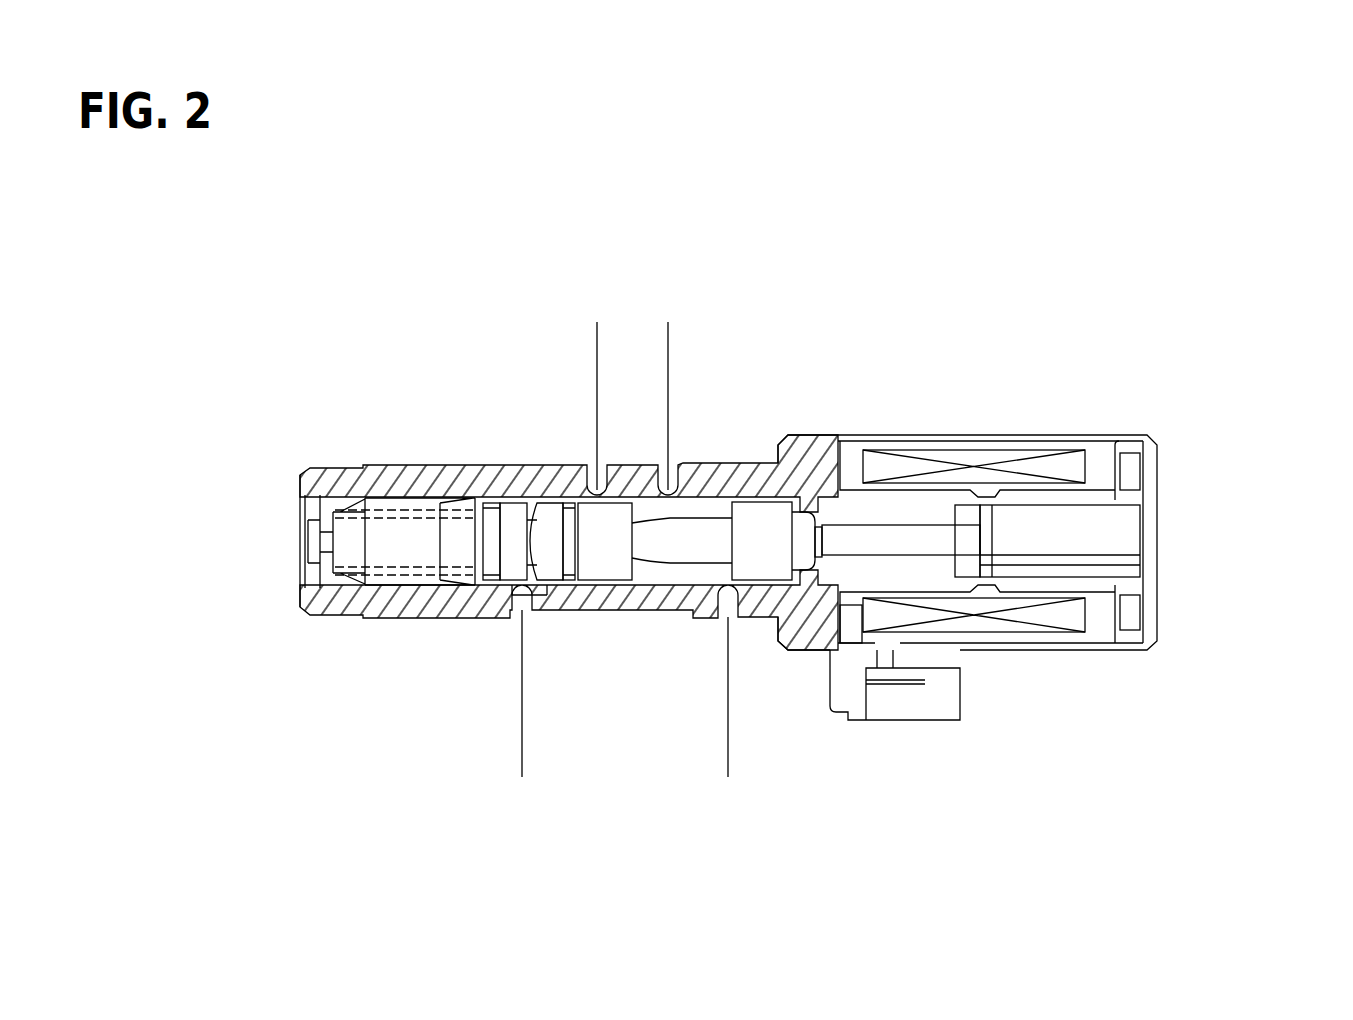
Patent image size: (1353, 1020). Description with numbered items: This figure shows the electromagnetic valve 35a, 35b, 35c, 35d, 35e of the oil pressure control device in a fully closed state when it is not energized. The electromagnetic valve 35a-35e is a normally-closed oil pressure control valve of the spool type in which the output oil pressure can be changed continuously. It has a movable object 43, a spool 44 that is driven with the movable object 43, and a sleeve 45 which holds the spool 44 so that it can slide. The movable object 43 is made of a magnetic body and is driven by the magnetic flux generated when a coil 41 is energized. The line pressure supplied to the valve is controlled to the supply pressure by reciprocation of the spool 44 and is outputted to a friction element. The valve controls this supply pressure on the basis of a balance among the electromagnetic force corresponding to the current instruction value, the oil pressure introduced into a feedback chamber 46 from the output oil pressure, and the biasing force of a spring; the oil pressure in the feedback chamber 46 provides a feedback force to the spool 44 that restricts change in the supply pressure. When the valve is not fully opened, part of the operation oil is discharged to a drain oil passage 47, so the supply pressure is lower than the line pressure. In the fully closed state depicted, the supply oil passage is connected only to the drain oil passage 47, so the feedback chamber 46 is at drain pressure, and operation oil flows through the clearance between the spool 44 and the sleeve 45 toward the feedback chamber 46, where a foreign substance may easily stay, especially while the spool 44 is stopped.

The electromagnetic valve 35a is at (811, 500).
The electromagnetic valve 35b is at (811, 500).
The electromagnetic valve 35c is at (811, 500).
The electromagnetic valve 35d is at (811, 500).
The electromagnetic valve 35e is at (1117, 258).
The coil 41 is at (1057, 463).
The movable object 43 is at (1128, 523).
The spool 44 is at (770, 527).
The sleeve 45 is at (488, 467).
The feedback chamber 46 is at (533, 587).
The drain oil passage 47 is at (731, 662).